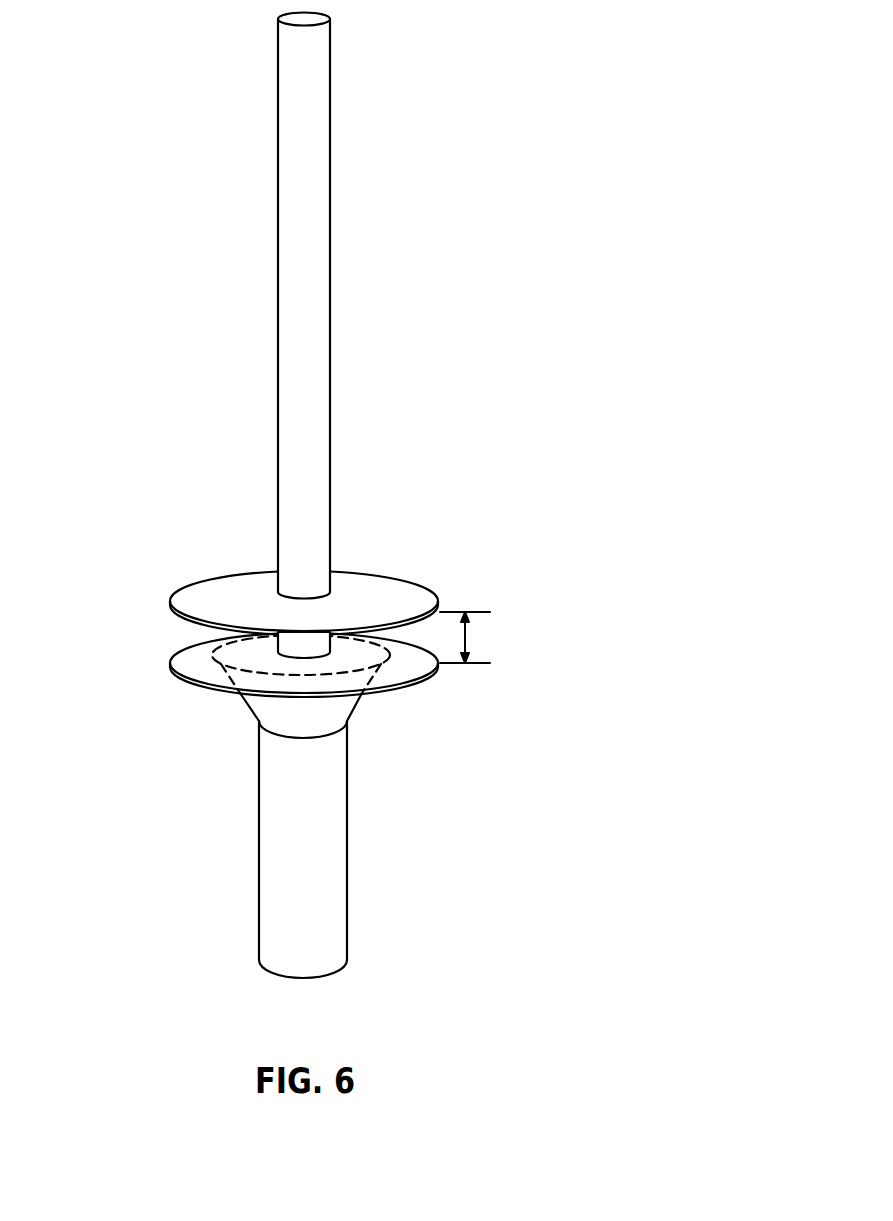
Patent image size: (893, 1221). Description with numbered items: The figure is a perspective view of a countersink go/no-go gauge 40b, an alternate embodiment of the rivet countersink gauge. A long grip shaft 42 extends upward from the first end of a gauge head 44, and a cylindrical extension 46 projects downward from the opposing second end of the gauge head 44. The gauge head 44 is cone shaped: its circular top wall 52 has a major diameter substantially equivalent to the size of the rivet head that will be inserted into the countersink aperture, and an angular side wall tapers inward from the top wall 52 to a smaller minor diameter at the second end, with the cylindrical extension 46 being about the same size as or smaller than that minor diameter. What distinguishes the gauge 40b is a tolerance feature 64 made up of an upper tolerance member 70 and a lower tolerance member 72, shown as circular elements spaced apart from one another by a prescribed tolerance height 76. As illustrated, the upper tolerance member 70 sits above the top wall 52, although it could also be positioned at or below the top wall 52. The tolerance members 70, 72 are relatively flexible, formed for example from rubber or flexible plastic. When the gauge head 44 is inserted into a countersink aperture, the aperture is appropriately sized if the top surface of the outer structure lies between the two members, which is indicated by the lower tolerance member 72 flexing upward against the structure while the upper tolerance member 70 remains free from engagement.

The countersink go/no-go gauge 40b is at (308, 496).
The grip shaft 42 is at (331, 257).
The gauge head 44 is at (245, 708).
The cylindrical extension 46 is at (317, 910).
The top wall 52 is at (247, 653).
The tolerance feature 64 is at (375, 616).
The upper tolerance member 70 is at (397, 578).
The lower tolerance member 72 is at (417, 682).
The tolerance height 76 is at (468, 637).